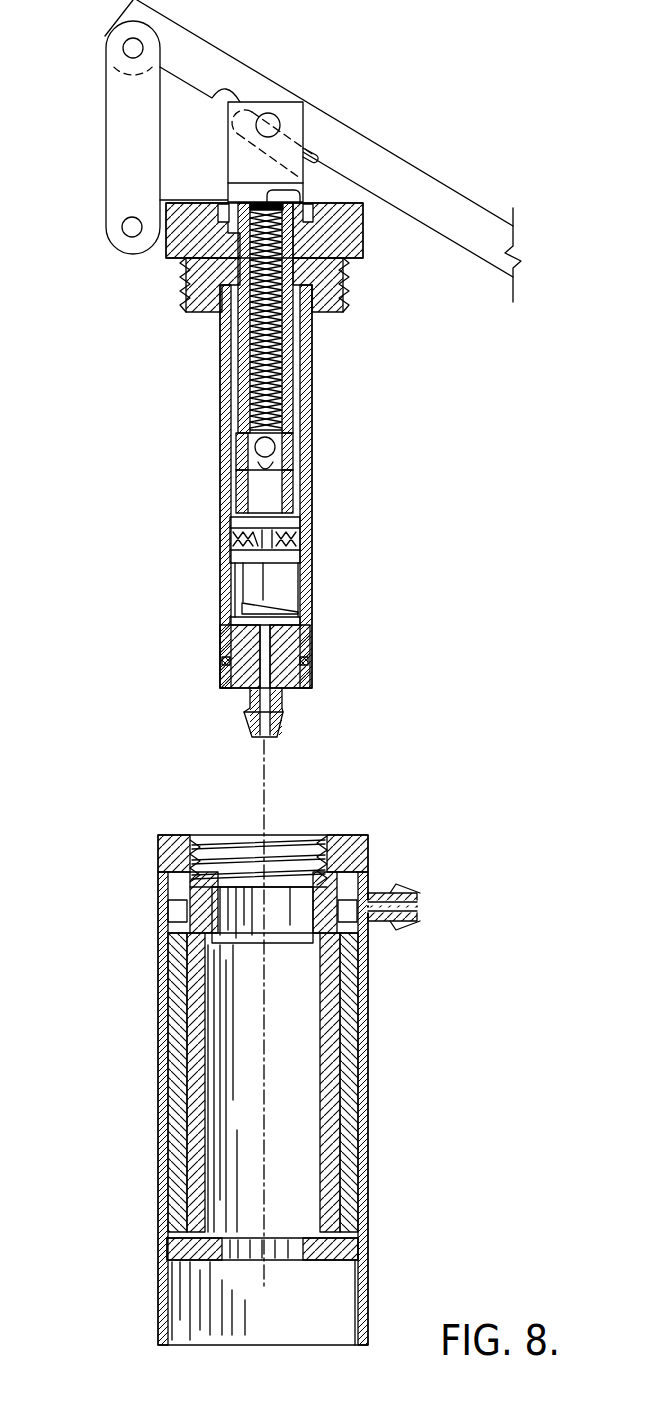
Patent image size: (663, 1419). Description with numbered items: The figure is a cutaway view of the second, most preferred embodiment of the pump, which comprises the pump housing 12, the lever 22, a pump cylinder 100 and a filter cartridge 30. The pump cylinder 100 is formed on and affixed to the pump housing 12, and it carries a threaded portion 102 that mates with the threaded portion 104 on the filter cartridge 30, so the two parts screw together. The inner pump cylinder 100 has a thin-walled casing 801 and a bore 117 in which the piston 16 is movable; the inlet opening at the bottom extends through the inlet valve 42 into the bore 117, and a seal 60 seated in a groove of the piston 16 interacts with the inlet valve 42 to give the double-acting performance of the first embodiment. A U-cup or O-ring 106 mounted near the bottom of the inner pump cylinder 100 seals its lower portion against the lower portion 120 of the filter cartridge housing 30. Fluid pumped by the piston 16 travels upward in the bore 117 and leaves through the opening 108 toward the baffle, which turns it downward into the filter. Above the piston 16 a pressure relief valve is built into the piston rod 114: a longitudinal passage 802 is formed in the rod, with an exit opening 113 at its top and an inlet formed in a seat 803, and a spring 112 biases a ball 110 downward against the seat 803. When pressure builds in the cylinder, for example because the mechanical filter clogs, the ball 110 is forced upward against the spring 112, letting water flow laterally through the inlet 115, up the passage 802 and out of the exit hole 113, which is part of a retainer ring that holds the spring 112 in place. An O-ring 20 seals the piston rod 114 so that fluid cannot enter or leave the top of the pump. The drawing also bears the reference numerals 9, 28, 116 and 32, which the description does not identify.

The lever 22 is at (348, 152).
The pivot hole 28 is at (256, 125).
The mounting block 9 is at (248, 165).
The exit opening 113 is at (330, 198).
The O-ring 20 is at (365, 222).
The pump housing 12 is at (367, 230).
The threaded portion 102 is at (343, 300).
The opening 108 is at (225, 330).
The piston rod 114 is at (292, 378).
The thin-walled casing 801 is at (312, 388).
The longitudinal passage 802 is at (312, 397).
The seat 803 is at (312, 453).
The spring 112 is at (255, 443).
The ball 110 is at (248, 455).
The pump cylinder 100 is at (322, 478).
The inlet 115 is at (240, 483).
The chamber 116 is at (240, 500).
The seal 60 is at (312, 538).
The bore 117 is at (312, 568).
The piston 16 is at (252, 583).
The inlet valve 42 is at (312, 596).
The U-cup or O-ring 106 is at (308, 665).
The threaded portion 104 is at (307, 847).
The filter cartridge 30 is at (374, 955).
The outer sleeve 32 is at (366, 1158).
The lower portion 120 is at (283, 1250).